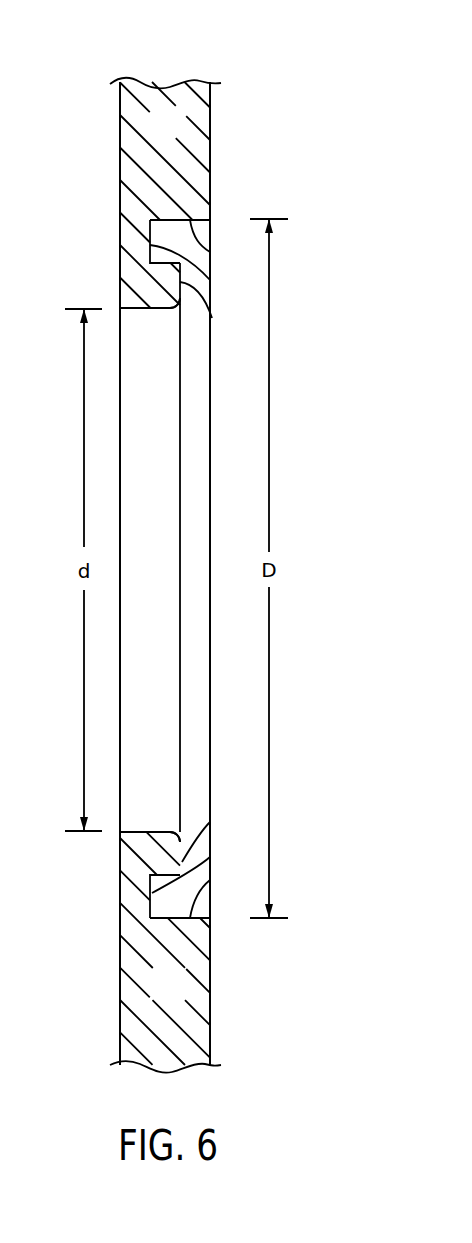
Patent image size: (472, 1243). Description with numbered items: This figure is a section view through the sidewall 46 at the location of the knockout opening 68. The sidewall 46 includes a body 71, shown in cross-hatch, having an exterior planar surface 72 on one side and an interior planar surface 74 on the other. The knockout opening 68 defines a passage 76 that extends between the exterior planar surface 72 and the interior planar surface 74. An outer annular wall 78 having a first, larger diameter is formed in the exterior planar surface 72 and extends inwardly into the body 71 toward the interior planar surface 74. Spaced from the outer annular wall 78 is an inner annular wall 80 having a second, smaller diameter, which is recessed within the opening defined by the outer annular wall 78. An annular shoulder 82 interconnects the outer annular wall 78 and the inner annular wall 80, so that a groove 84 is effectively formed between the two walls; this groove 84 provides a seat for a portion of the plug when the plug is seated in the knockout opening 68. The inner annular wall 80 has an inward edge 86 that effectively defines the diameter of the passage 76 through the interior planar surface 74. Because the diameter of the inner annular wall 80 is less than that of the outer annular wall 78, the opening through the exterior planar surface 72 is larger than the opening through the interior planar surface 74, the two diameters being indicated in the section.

The sidewall 46 is at (249, 72).
The knockout opening 68 is at (62, 705).
The body 71 is at (156, 133).
The exterior planar surface 72 is at (212, 150).
The interior planar surface 74 is at (120, 128).
The passage 76 is at (139, 541).
The outer annular wall 78 is at (170, 237).
The inner annular wall 80 is at (212, 318).
The annular shoulder 82 is at (210, 280).
The groove 84 is at (210, 252).
The inward edge 86 is at (148, 310).